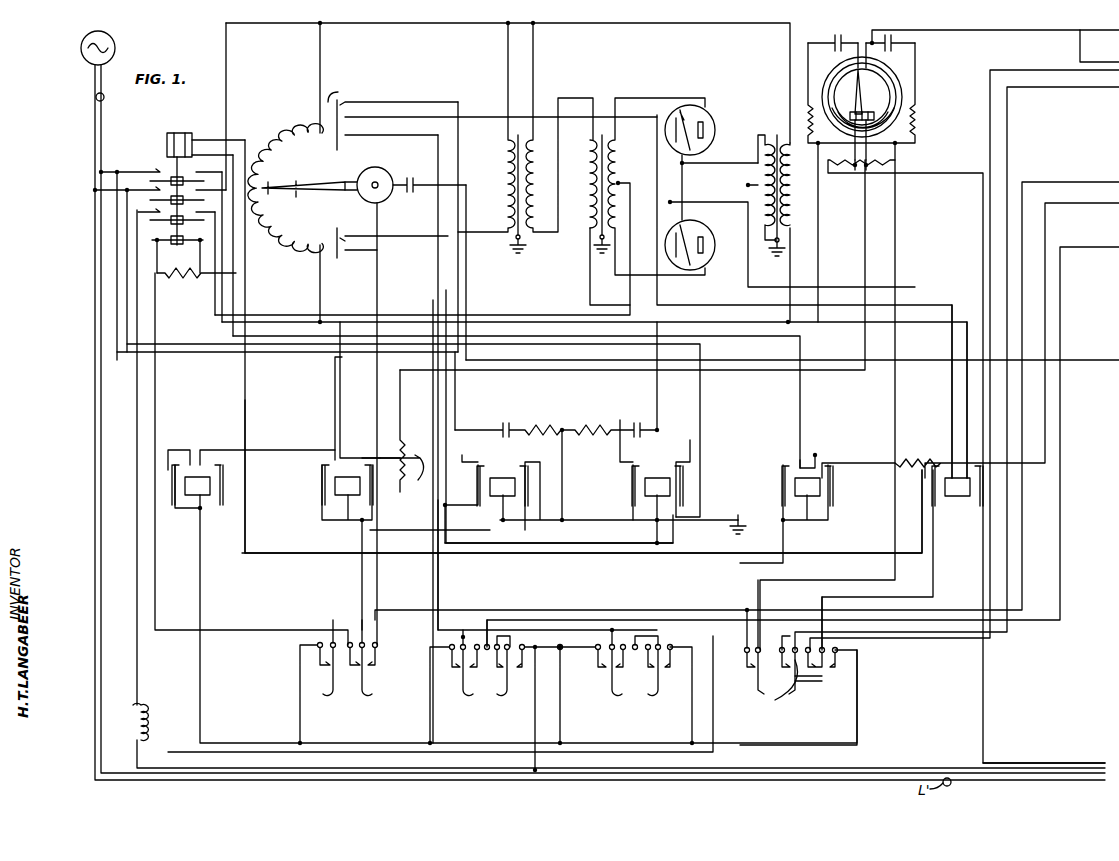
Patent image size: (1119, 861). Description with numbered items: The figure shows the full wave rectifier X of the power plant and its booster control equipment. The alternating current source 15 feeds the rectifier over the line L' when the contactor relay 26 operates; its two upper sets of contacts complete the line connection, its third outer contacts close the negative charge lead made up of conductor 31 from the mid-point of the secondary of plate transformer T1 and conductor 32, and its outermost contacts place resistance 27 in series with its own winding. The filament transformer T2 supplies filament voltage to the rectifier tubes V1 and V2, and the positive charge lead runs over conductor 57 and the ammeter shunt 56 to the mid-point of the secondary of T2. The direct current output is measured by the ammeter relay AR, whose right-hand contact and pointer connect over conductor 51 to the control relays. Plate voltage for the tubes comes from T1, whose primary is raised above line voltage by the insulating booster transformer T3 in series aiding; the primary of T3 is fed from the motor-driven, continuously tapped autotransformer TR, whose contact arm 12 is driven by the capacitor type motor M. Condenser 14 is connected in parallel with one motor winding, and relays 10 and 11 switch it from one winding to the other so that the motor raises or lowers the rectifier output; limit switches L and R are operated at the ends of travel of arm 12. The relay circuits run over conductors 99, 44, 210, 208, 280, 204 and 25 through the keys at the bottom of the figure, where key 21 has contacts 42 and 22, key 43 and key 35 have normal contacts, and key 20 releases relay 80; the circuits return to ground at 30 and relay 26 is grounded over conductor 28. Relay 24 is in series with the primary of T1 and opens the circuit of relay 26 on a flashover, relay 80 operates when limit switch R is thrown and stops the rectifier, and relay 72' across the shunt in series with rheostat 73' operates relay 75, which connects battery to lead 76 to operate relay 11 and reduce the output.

The alternating current source 15 is at (85, 42).
The line L' is at (84, 96).
The contactor relay 26 is at (165, 143).
The resistance 27 is at (196, 284).
The autotransformer TR is at (287, 136).
The contact arm 12 is at (298, 178).
The motor M is at (369, 397).
The limit switch L is at (492, 114).
The limit switch R is at (346, 258).
The condenser 14 is at (412, 180).
The rectifier X is at (597, 45).
The plate transformer T1 is at (590, 140).
The filament transformer T2 is at (776, 142).
The insulating booster transformer T3 is at (528, 238).
The rectifier tube V1 is at (710, 118).
The rectifier tube V2 is at (712, 243).
The ammeter relay AR is at (890, 76).
The ammeter shunt 56 is at (848, 168).
The conductor 51 is at (1089, 63).
The conductor 204 is at (1019, 70).
The conductor 210 is at (1022, 123).
The conductor 280 is at (1088, 217).
The conductor 208 is at (1095, 258).
The conductor 99 is at (1076, 359).
The conductor 31 is at (492, 313).
The conductor 28 is at (158, 403).
The conductor 32 is at (136, 463).
The conductor 25 is at (247, 513).
The relay 75 is at (211, 481).
The relay 72' is at (351, 493).
The rheostat 73' is at (402, 436).
The relay 10 is at (487, 490).
The relay 11 is at (672, 490).
The ground 30 is at (744, 535).
The relay 80 is at (786, 508).
The relay 24 is at (902, 477).
The conductor 44 is at (440, 593).
The key 20 is at (338, 682).
The key 35 is at (495, 696).
The key 43 is at (628, 686).
The key 21 is at (771, 637).
The contacts 22 is at (798, 671).
The contacts 42 is at (798, 687).
The lead 76 is at (720, 730).
The conductor 57 is at (1016, 762).